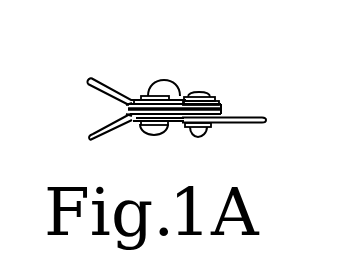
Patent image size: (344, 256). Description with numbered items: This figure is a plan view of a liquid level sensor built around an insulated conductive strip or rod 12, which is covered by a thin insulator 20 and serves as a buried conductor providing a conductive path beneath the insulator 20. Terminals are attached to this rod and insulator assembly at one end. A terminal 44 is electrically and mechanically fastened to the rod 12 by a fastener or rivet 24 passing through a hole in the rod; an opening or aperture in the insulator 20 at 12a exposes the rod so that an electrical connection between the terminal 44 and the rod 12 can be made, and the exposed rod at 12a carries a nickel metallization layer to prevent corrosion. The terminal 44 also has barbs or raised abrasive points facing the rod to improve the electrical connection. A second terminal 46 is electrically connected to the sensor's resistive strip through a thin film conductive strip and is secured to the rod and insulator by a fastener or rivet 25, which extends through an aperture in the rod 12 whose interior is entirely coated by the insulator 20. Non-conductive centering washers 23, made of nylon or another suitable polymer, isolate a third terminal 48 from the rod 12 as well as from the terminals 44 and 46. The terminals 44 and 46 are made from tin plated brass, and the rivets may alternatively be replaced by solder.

The insulated conductive strip or rod 12 is at (211, 95).
The opening or aperture in insulator 12a is at (121, 103).
The terminal 48 is at (100, 80).
The terminal 44 is at (91, 132).
The fastener or rivet 24 is at (143, 88).
The non-conductive centering washers 23 is at (172, 88).
The fastener or rivet 25 is at (184, 86).
The terminal 46 is at (242, 107).
The thin insulator 20 is at (208, 115).